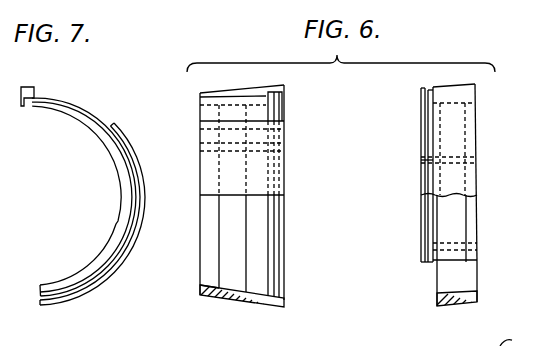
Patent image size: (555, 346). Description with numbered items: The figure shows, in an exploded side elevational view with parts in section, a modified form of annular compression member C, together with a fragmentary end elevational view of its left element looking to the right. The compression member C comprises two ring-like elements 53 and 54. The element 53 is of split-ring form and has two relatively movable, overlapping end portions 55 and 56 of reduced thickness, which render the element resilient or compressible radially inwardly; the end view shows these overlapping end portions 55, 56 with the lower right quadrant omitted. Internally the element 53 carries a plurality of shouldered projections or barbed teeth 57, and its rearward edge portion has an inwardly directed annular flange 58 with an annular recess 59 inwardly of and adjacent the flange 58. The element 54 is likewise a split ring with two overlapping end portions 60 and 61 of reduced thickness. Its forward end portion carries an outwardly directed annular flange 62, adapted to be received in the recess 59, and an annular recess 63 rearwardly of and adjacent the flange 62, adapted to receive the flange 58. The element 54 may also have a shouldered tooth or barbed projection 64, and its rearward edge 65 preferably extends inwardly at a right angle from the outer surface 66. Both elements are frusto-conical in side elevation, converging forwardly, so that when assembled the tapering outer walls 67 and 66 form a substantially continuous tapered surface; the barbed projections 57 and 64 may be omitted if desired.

In FIG. 7, the annular element 53 is at (30, 86).
In FIG. 6, the annular element 53 is at (269, 91).
In FIG. 6, the annular element 54 is at (466, 82).
In FIG. 7, the end portion 55 is at (83, 114).
In FIG. 6, the end portion 55 is at (205, 109).
In FIG. 7, the end portion 56 is at (138, 160).
In FIG. 6, the end portion 56 is at (285, 165).
In FIG. 6, the barbed teeth 57 is at (216, 283).
In FIG. 6, the annular flange 58 is at (287, 299).
In FIG. 6, the annular recess 59 is at (276, 292).
In FIG. 6, the end portion 60 is at (438, 301).
In FIG. 6, the end portion 61 is at (470, 259).
In FIG. 6, the annular flange 62 is at (422, 88).
In FIG. 6, the annular recess 63 is at (431, 89).
In FIG. 6, the barbed projection 64 is at (440, 233).
In FIG. 6, the rearward edge 65 is at (478, 298).
In FIG. 6, the outer surface 66 is at (455, 307).
In FIG. 6, the outer wall 67 is at (250, 298).
In FIG. 6, the compression member C is at (481, 126).